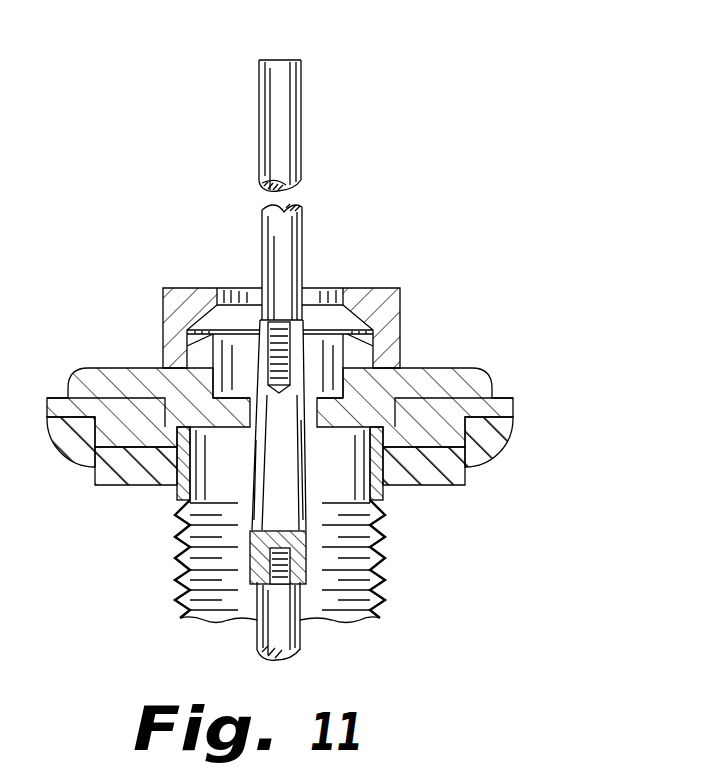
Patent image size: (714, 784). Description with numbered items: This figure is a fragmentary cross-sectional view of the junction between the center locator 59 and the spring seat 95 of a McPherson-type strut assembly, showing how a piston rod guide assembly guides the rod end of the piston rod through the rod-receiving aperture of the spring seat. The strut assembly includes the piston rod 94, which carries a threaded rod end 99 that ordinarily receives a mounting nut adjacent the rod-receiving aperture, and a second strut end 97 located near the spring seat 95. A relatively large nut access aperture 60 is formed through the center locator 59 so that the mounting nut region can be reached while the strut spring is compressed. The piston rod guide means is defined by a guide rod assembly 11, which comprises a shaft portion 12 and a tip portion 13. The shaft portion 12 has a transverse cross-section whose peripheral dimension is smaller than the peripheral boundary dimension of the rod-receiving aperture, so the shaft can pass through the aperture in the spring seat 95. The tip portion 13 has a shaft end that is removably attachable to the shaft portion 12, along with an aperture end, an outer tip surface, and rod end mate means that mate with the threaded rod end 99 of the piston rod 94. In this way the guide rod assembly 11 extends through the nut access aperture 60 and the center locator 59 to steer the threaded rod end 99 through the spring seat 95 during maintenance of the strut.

The guide rod assembly 11 is at (280, 44).
The shaft portion 12 is at (286, 104).
The tip portion 13 is at (278, 500).
The center locator 59 is at (163, 322).
The nut access aperture 60 is at (322, 276).
The piston rod 94 is at (303, 643).
The spring seat 95 is at (455, 368).
The second strut end 97 is at (400, 308).
The threaded rod end 99 is at (308, 566).